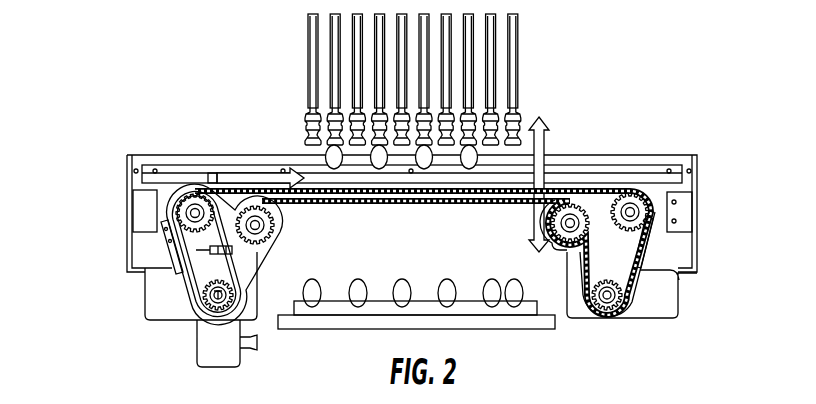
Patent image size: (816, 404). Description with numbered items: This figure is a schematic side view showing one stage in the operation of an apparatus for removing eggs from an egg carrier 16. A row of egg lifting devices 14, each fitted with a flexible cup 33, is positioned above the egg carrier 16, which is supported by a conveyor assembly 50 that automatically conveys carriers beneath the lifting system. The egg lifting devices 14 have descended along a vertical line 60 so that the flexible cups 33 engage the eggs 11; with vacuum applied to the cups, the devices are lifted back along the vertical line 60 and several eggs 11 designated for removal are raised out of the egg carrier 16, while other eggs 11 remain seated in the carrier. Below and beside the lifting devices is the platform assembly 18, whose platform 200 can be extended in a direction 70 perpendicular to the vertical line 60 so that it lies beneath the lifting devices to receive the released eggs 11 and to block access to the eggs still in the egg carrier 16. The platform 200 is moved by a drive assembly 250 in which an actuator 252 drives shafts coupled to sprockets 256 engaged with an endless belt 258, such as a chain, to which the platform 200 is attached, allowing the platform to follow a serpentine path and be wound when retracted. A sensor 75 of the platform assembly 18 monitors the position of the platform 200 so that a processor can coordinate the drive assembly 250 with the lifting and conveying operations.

The egg lifting devices 14 is at (307, 50).
The flexible cup 33 is at (306, 117).
The eggs 11 is at (325, 153).
The platform assembly 18 is at (99, 181).
The direction 70 is at (213, 177).
The vertical line 60 is at (546, 146).
The drive assembly 250 is at (656, 197).
The platform 200 is at (198, 284).
The sensor 75 is at (205, 252).
The actuator 252 is at (206, 350).
The egg carrier 16 is at (531, 303).
The conveyor assembly 50 is at (533, 333).
The endless belt 258 is at (640, 285).
The sprockets 256 is at (607, 301).